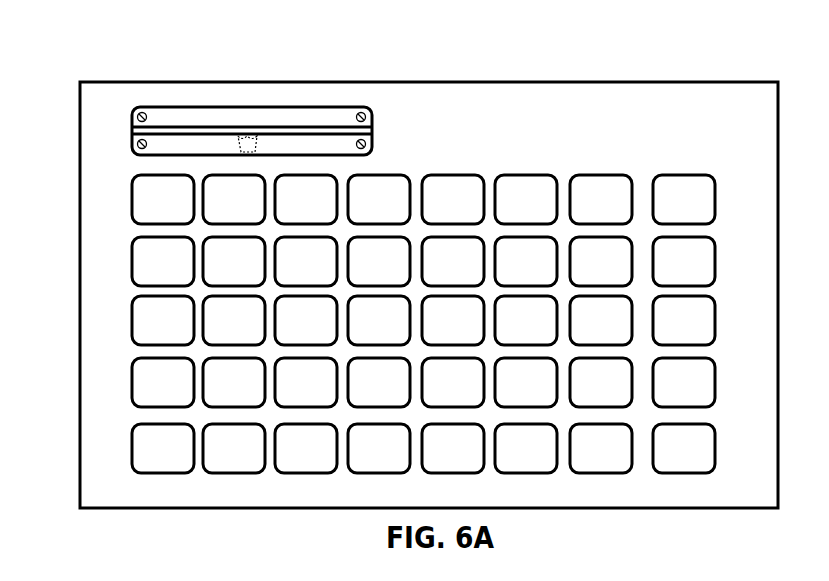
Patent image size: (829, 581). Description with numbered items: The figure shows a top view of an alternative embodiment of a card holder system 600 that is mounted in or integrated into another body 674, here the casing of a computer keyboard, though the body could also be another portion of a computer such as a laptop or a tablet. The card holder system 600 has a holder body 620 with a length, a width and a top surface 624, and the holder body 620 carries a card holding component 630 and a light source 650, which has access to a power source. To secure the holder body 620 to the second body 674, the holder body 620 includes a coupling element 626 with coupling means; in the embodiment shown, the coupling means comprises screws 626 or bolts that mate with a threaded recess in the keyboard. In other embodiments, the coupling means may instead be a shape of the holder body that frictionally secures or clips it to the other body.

The card holder system 600 is at (241, 86).
The holder body 620 is at (276, 110).
The top surface 624 is at (210, 117).
The coupling element 626 is at (141, 108).
The card holding component 630 is at (332, 115).
The light source 650 is at (228, 150).
The body 674 is at (537, 117).